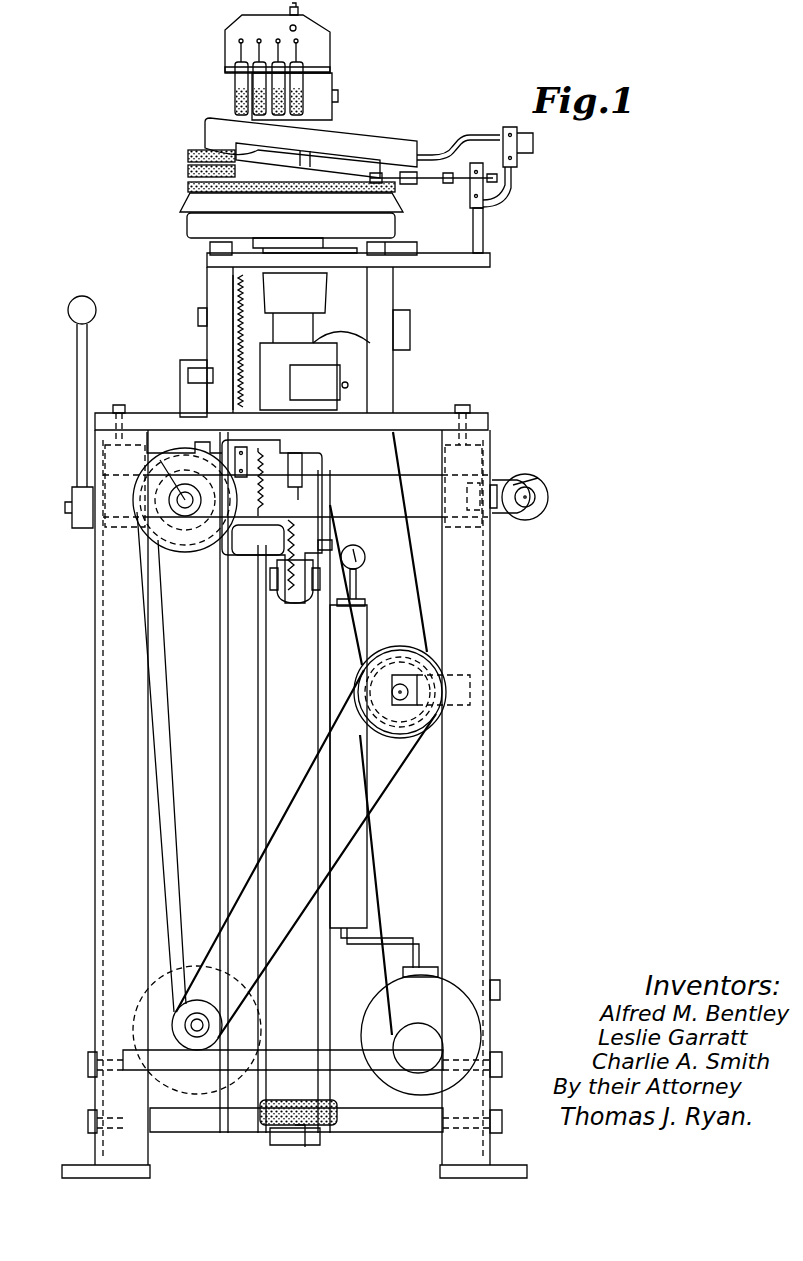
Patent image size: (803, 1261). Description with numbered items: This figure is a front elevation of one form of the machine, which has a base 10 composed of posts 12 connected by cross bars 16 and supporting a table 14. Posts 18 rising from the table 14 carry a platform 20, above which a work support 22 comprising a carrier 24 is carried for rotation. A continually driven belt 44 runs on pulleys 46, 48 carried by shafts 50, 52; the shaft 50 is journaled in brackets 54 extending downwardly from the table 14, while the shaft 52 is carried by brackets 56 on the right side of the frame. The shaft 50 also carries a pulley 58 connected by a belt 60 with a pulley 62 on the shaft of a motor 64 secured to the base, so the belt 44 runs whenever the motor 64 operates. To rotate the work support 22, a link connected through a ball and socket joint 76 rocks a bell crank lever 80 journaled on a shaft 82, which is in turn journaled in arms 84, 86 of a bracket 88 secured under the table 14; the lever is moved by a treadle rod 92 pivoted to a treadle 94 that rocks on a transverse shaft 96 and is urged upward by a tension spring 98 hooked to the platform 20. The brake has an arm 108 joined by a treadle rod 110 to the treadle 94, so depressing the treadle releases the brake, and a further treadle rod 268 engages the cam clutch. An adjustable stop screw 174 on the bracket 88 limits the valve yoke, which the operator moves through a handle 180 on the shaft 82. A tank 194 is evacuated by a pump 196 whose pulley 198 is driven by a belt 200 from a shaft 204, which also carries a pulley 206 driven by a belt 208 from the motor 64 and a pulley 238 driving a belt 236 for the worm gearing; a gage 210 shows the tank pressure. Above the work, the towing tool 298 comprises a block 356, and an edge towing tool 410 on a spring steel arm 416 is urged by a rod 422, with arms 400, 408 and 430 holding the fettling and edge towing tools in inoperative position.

The base 10 is at (521, 833).
The posts 12 is at (477, 893).
The table 14 is at (420, 413).
The cross bars 16 is at (302, 1052).
The posts 18 is at (395, 303).
The platform 20 is at (455, 267).
The work support 22 is at (162, 200).
The carrier 24 is at (185, 225).
The belt 44 is at (392, 480).
The pulley 46 is at (168, 530).
The pulley 48 is at (545, 483).
The shaft 50 is at (178, 505).
The shaft 52 is at (527, 497).
The brackets 54 is at (172, 445).
The brackets 56 is at (526, 477).
The pulley 58 is at (203, 535).
The belt 60 is at (165, 797).
The pulley 62 is at (197, 1000).
The motor 64 is at (158, 996).
The ball and socket joint 76 is at (242, 450).
The bell crank lever 80 is at (263, 555).
The shaft 82 is at (143, 480).
The arm 84 is at (205, 442).
The arm 86 is at (306, 472).
The bracket 88 is at (238, 565).
The treadle rod 92 is at (265, 705).
The treadle 94 is at (328, 1128).
The shaft 96 is at (420, 1133).
The tension spring 98 is at (232, 345).
The arm 108 is at (318, 372).
The treadle rod 110 is at (335, 547).
The adjustable stop screw 174 is at (305, 470).
The handle 180 is at (76, 365).
The tank 194 is at (318, 715).
The pump 196 is at (432, 988).
The pulley 198 is at (440, 1008).
The belt 200 is at (385, 895).
The shaft 204 is at (405, 698).
The pulley 206 is at (388, 733).
The belt 208 is at (280, 845).
The gage 210 is at (362, 565).
The belt 236 is at (415, 562).
The pulley 238 is at (420, 660).
The treadle rod 268 is at (220, 800).
The towing tool 298 is at (361, 76).
The block 356 is at (248, 22).
The arm 400 is at (458, 185).
The arm 408 is at (473, 220).
The edge towing tool 410 is at (194, 130).
The spring steel arm 416 is at (362, 140).
The rod 422 is at (452, 150).
The arm 430 is at (512, 197).